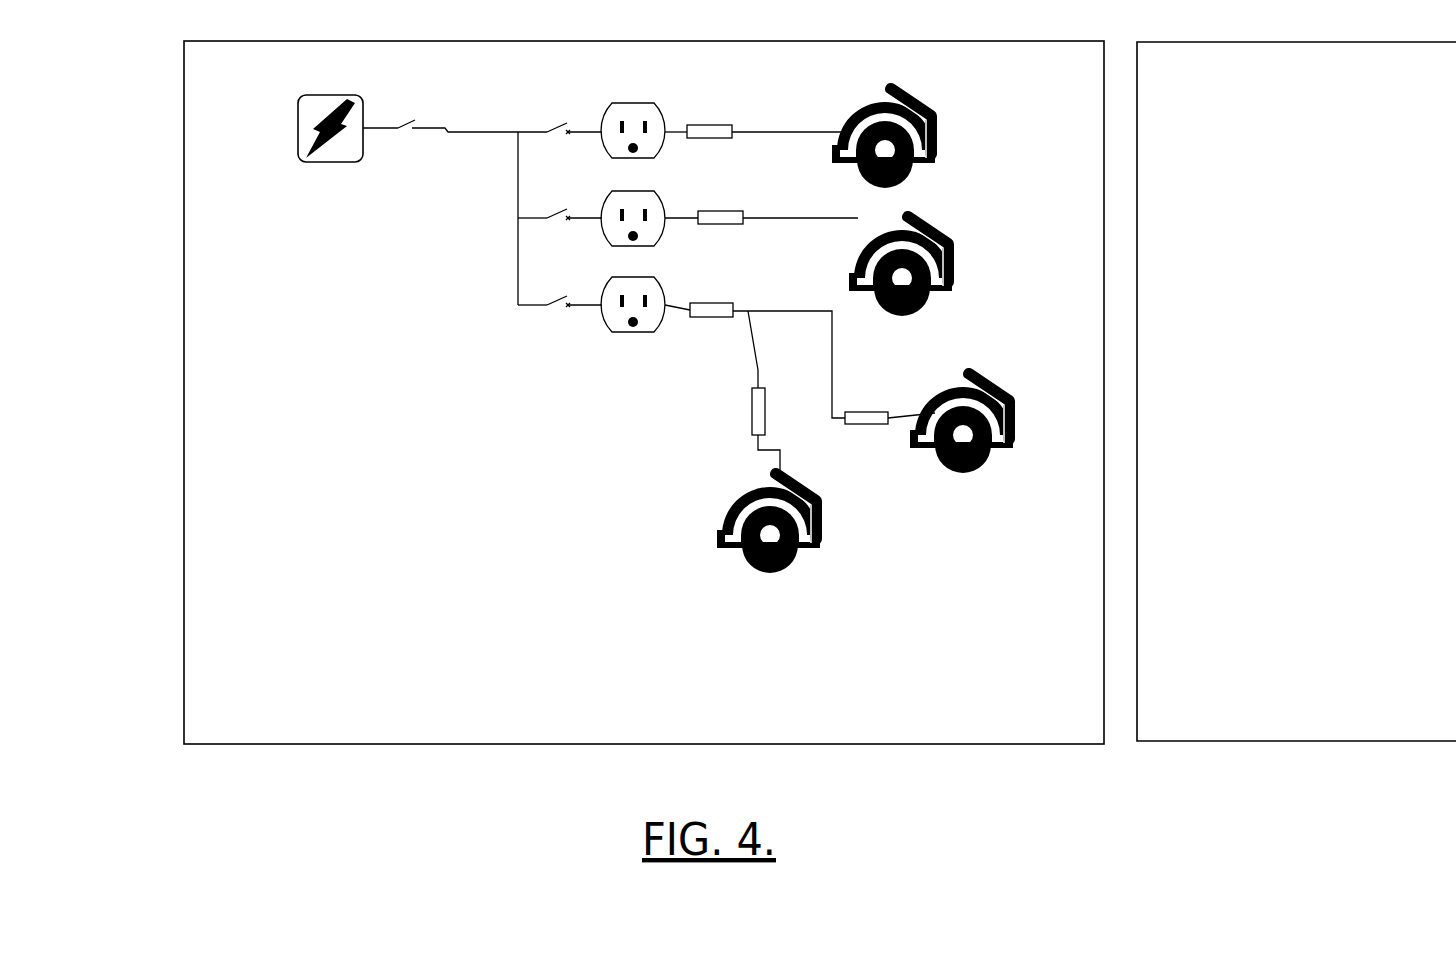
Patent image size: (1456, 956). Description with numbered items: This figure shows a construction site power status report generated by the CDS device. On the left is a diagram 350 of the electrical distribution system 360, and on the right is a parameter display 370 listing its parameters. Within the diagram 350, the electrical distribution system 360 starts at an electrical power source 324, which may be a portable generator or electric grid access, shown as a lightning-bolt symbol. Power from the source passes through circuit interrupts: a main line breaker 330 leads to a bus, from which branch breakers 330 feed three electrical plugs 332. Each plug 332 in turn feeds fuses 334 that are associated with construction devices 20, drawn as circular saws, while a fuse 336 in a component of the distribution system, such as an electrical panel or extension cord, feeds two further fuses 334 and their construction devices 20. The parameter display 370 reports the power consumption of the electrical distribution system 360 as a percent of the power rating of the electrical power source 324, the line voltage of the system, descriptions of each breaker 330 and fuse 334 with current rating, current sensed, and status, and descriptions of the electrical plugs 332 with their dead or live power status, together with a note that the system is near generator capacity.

The construction device 20 is at (879, 326).
The electrical power source 324 is at (287, 113).
The breaker 330 is at (500, 237).
The electrical plug 332 is at (685, 203).
The fuse 334 is at (806, 258).
The fuse 336 is at (763, 294).
The diagram 350 is at (601, 392).
The electrical distribution system 360 is at (500, 475).
The parameter display 370 is at (1283, 427).